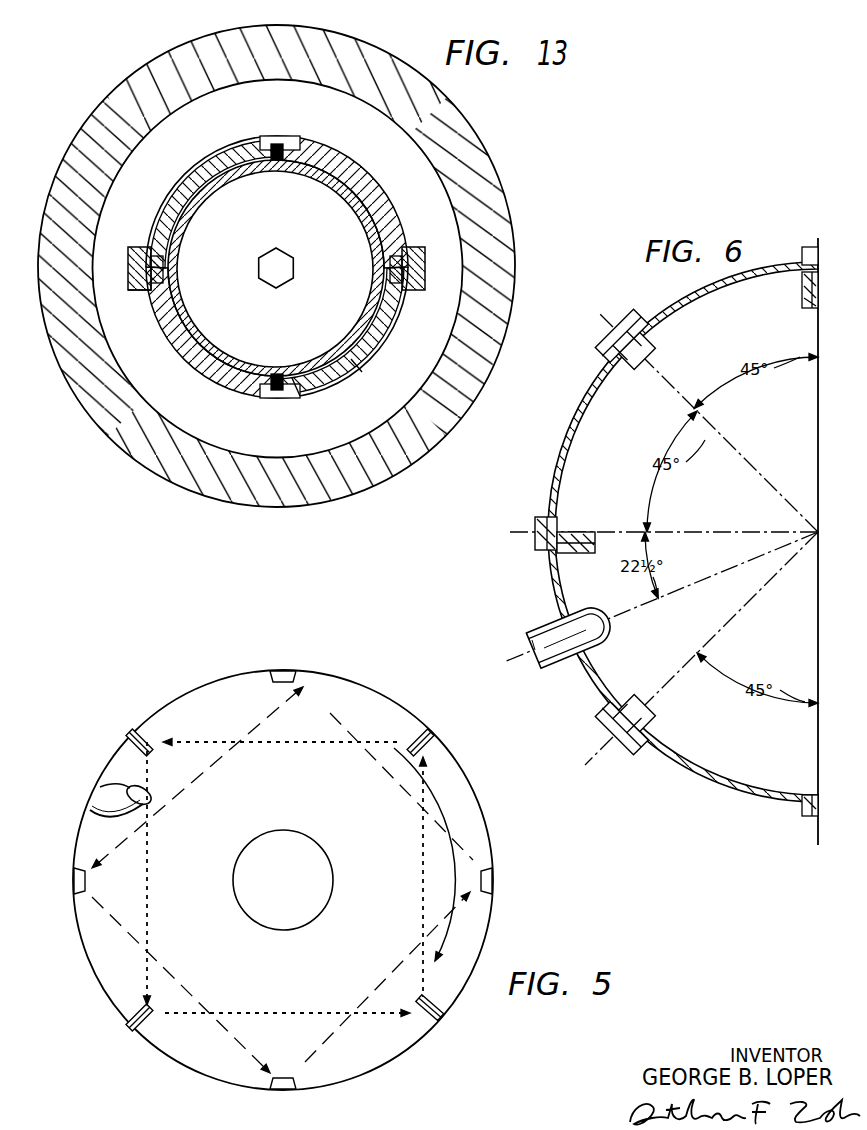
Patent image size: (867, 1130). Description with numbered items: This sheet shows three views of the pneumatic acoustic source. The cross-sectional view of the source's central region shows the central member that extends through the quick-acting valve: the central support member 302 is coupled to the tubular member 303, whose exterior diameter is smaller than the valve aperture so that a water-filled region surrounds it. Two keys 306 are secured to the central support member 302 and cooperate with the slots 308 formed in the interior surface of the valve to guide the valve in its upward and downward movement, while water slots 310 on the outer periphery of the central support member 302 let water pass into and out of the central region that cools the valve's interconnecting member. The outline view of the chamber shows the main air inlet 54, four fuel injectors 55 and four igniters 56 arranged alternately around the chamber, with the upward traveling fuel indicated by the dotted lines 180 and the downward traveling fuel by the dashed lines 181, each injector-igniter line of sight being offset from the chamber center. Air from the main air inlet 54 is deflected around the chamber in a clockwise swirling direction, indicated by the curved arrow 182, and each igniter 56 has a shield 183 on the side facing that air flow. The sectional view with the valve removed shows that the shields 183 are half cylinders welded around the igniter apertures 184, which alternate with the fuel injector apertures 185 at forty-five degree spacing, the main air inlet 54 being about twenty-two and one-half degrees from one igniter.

In FIG. 13, the central support member 302 is at (235, 158).
In FIG. 13, the tubular member 303 is at (226, 352).
In FIG. 13, the key 306 is at (142, 287).
In FIG. 13, the slot 308 is at (141, 246).
In FIG. 13, the water slots 310 is at (358, 372).
In FIG. 6, the main air inlet 54 is at (558, 622).
In FIG. 5, the main air inlet 54 is at (113, 790).
In FIG. 5, the fuel injector 55 is at (281, 671).
In FIG. 5, the igniter 56 is at (432, 746).
In FIG. 5, the dotted lines 180 is at (310, 1012).
In FIG. 5, the dashed lines 181 is at (412, 962).
In FIG. 5, the curved arrow 182 is at (440, 806).
In FIG. 6, the shield 183 is at (578, 553).
In FIG. 5, the shield 183 is at (440, 1012).
In FIG. 6, the igniter aperture 184 is at (556, 530).
In FIG. 6, the fuel injector aperture 185 is at (640, 338).